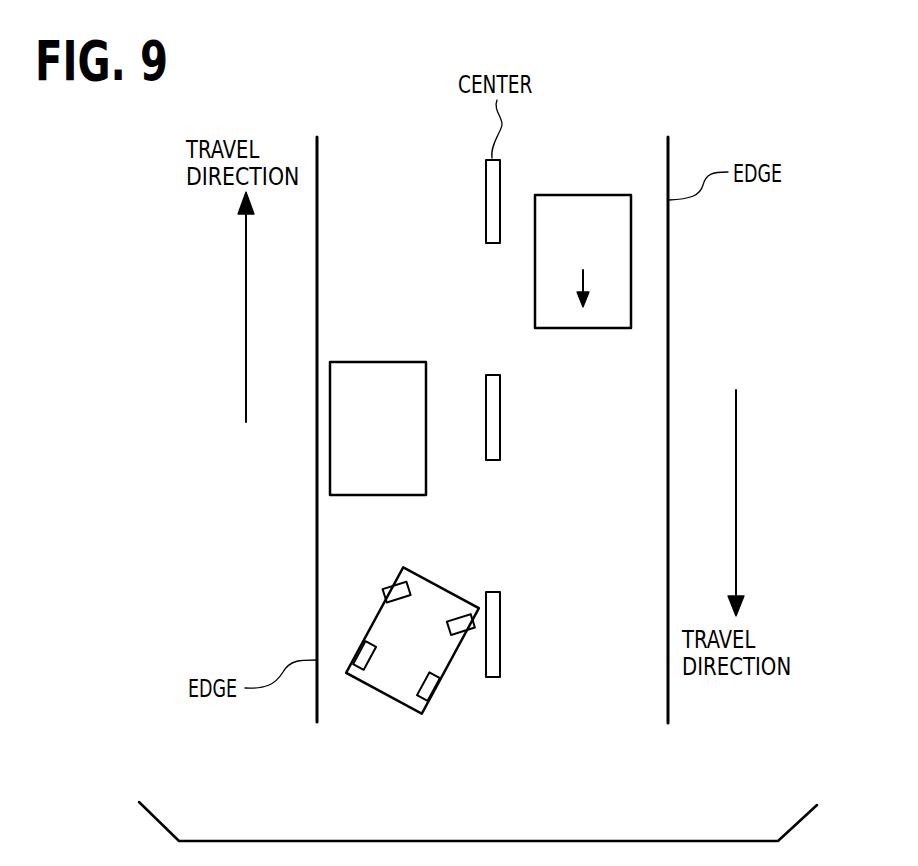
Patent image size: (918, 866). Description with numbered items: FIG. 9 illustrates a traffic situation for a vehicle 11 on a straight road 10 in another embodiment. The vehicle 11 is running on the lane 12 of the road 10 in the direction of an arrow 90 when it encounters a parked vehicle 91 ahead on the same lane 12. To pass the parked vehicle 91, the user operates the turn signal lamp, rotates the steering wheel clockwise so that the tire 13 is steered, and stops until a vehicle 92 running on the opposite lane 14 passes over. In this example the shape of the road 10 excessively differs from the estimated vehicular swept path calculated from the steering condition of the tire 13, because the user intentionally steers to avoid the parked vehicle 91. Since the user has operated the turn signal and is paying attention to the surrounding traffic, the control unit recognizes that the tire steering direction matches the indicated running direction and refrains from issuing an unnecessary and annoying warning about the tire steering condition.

The road 10 is at (525, 725).
The vehicle 11 is at (383, 697).
The lane 12 is at (317, 138).
The tire 13 is at (384, 592).
The opposite lane 14 is at (669, 148).
The arrow 90 is at (246, 308).
The parked vehicle 91 is at (330, 448).
The vehicle running on opposite lane 92 is at (631, 263).